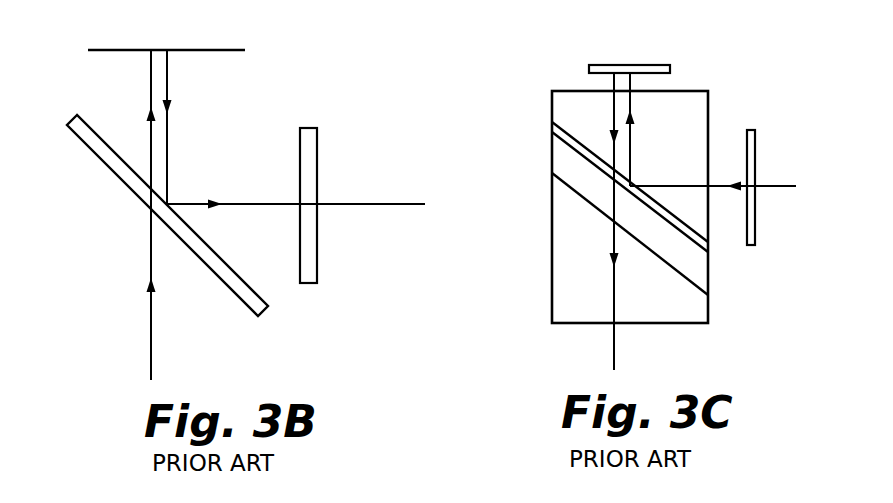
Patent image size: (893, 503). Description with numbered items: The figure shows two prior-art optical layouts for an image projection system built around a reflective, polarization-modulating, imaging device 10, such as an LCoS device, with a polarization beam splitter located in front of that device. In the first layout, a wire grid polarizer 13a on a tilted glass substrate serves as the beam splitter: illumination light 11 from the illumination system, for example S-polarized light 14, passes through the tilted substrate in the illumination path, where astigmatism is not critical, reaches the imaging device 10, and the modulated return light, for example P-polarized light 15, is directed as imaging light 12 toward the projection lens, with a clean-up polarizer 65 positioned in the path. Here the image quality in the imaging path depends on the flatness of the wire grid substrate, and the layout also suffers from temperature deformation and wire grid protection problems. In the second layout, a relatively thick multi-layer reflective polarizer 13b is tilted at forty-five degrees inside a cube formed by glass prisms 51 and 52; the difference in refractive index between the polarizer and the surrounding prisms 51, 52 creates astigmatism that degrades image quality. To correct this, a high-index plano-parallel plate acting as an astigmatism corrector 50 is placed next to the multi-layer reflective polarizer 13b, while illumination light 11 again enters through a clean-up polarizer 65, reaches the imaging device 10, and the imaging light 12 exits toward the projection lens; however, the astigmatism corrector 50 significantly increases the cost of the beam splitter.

In FIG. 3B, the reflective, polarization-modulating, imaging device 10 is at (230, 50).
In FIG. 3C, the reflective, polarization-modulating, imaging device 10 is at (652, 63).
In FIG. 3B, the illumination light 11 is at (155, 347).
In FIG. 3C, the illumination light 11 is at (783, 186).
In FIG. 3B, the imaging light 12 is at (403, 205).
In FIG. 3C, the imaging light 12 is at (615, 351).
In FIG. 3B, the wire grid polarizer 13a is at (109, 163).
In FIG. 3C, the multi-layer reflective polarizer 13b is at (554, 128).
In FIG. 3B, the S-polarized light 14 is at (262, 203).
In FIG. 3B, the P-polarized light 15 is at (151, 238).
In FIG. 3C, the astigmatism corrector 50 is at (704, 278).
In FIG. 3C, the prism 51 is at (694, 97).
In FIG. 3C, the prism 52 is at (561, 237).
In FIG. 3B, the clean-up polarizer 65 is at (310, 254).
In FIG. 3C, the clean-up polarizer 65 is at (753, 130).